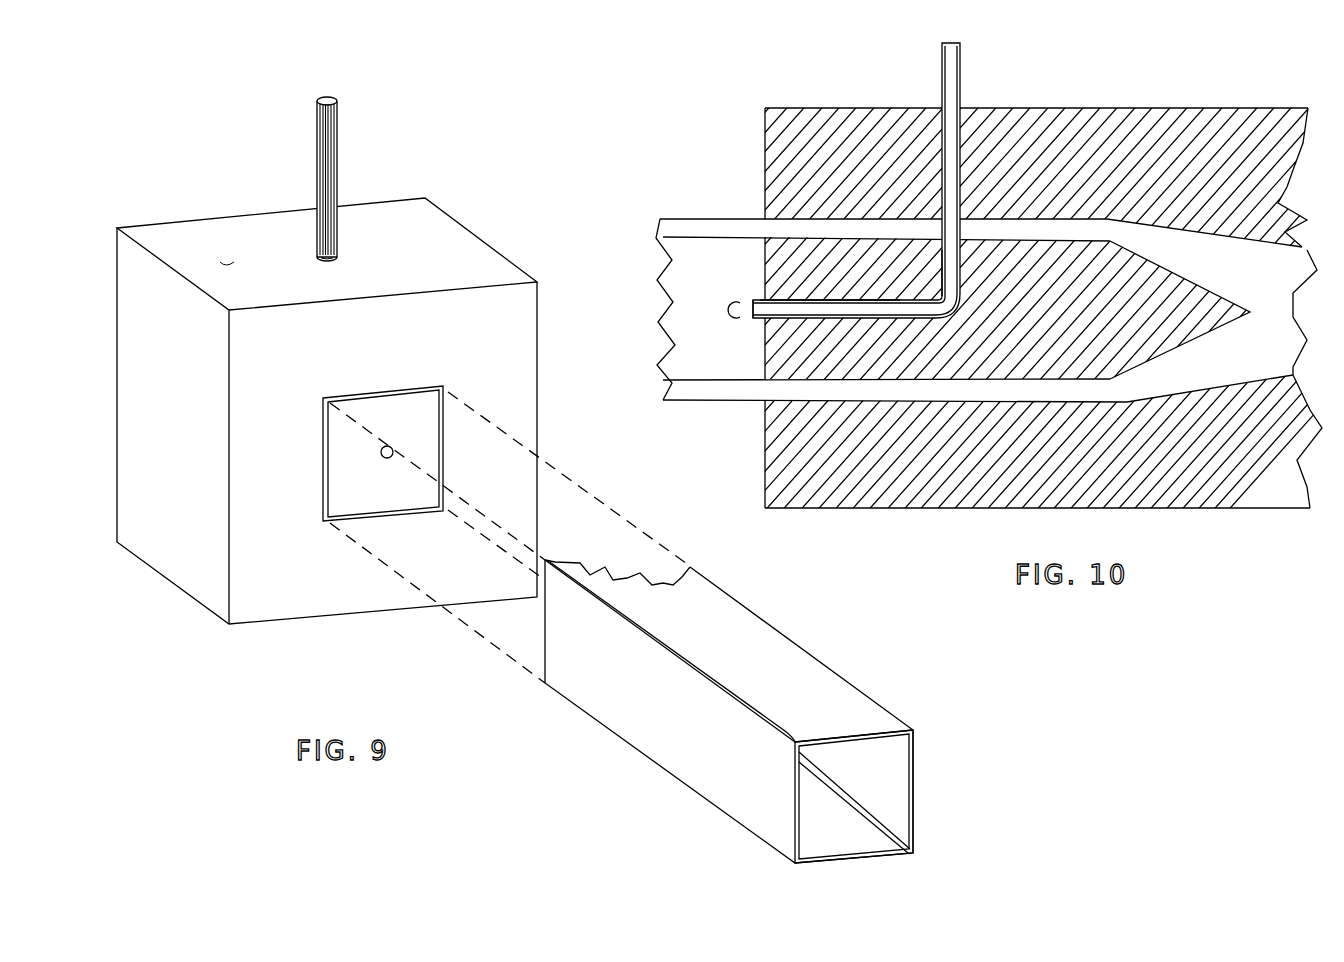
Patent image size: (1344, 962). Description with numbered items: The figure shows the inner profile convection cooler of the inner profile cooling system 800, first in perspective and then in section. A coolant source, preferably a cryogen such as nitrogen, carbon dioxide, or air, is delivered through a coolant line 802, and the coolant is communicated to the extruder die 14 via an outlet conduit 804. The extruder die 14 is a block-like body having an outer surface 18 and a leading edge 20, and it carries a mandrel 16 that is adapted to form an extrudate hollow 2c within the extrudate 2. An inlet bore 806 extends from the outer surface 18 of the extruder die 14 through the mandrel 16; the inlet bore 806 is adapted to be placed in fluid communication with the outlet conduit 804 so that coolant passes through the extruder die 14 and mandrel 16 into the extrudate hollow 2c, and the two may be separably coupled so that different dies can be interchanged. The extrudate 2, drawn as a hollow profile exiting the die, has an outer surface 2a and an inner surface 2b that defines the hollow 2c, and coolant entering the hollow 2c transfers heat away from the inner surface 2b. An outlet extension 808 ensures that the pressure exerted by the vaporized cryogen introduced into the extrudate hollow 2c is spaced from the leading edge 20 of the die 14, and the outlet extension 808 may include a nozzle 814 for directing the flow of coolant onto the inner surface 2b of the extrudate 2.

In FIG. 9, the inner profile cooling system 800 is at (190, 94).
In FIG. 10, the inner profile cooling system 800 is at (1193, 57).
In FIG. 9, the extruder die 14 is at (453, 217).
In FIG. 10, the extruder die 14 is at (838, 107).
In FIG. 10, the outer surface 18 is at (1053, 107).
In FIG. 10, the leading edge 20 is at (762, 203).
In FIG. 10, the mandrel 16 is at (1157, 263).
In FIG. 9, the extrudate 2 is at (800, 645).
In FIG. 10, the extrudate 2 is at (891, 310).
In FIG. 9, the outer surface 2a is at (827, 707).
In FIG. 9, the inner surface 2b is at (877, 777).
In FIG. 9, the extrudate hollow 2c is at (850, 830).
In FIG. 9, the coolant line 802 is at (338, 122).
In FIG. 10, the coolant line 802 is at (962, 60).
In FIG. 9, the outlet conduit 804 is at (385, 466).
In FIG. 10, the outlet conduit 804 is at (760, 324).
In FIG. 9, the inlet bore 806 is at (340, 257).
In FIG. 10, the inlet bore 806 is at (965, 107).
In FIG. 9, the outlet extension 808 is at (227, 258).
In FIG. 10, the outlet extension 808 is at (755, 298).
In FIG. 10, the nozzle 814 is at (728, 306).